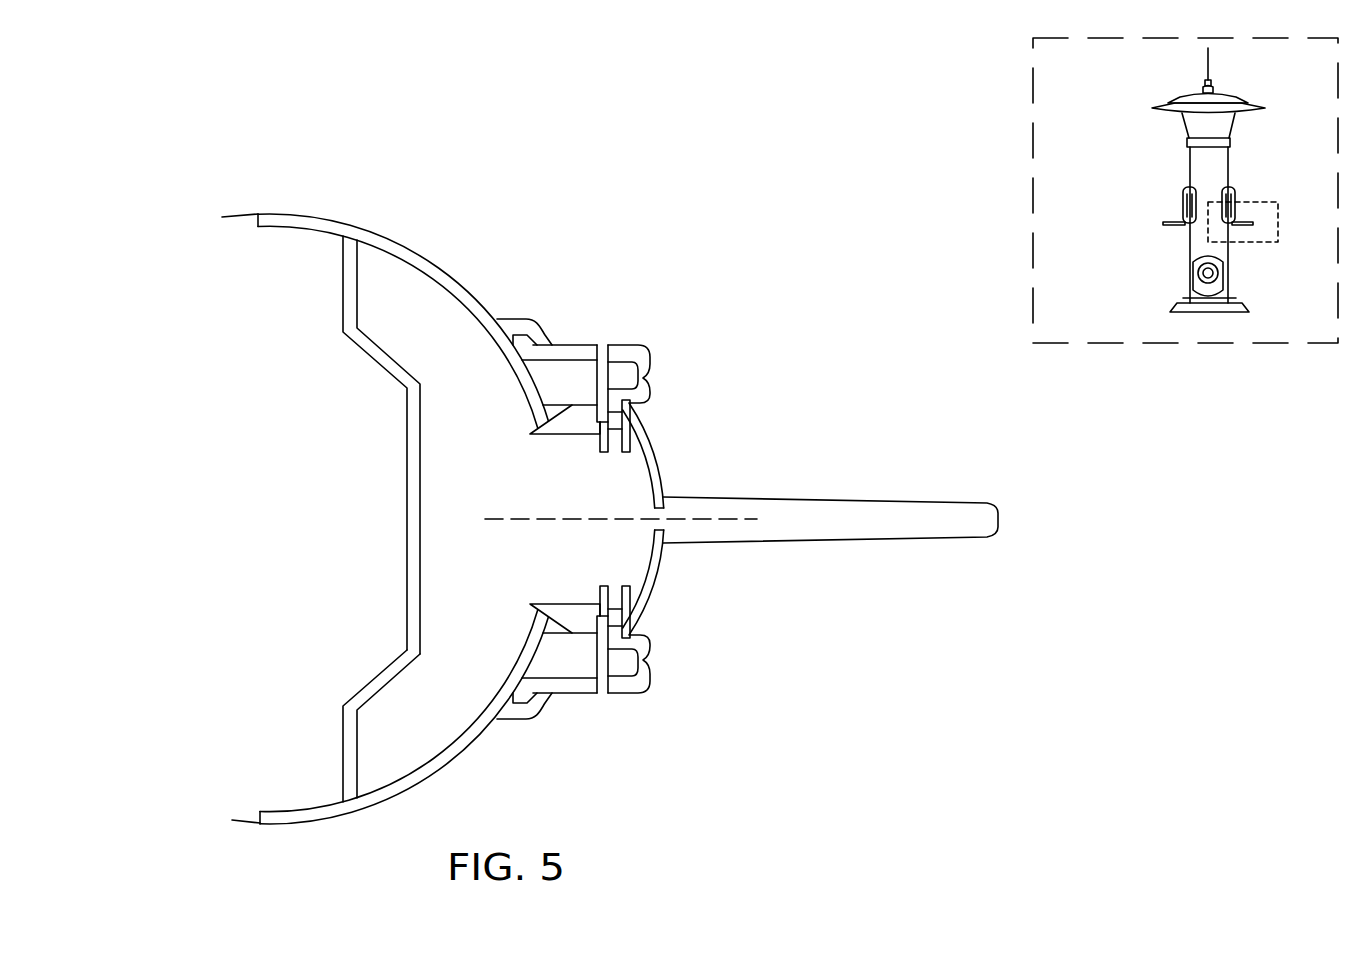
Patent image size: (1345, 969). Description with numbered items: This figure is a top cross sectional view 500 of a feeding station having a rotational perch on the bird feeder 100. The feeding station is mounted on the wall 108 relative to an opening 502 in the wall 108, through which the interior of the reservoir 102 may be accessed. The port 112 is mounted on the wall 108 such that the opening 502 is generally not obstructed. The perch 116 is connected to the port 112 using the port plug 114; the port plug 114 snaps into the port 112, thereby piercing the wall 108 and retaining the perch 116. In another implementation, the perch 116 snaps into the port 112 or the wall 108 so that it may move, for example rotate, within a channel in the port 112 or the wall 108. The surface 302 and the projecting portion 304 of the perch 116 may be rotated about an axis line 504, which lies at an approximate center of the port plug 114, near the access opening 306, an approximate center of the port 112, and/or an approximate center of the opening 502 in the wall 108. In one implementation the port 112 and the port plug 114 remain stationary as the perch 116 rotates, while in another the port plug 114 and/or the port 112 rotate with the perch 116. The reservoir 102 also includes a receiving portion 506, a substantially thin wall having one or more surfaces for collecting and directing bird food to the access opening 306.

The bird feeder 100 is at (1133, 153).
The reservoir 102 is at (249, 315).
The wall 108 is at (262, 214).
The port 112 is at (583, 343).
The port plug 114 is at (661, 560).
The perch 116 is at (683, 441).
The surface 302 is at (650, 364).
The projecting portion 304 is at (900, 538).
The access opening 306 is at (628, 508).
The top cross sectional view 500 is at (266, 126).
The opening 502 is at (554, 568).
The axis line 504 is at (485, 519).
The receiving portion 506 is at (405, 634).